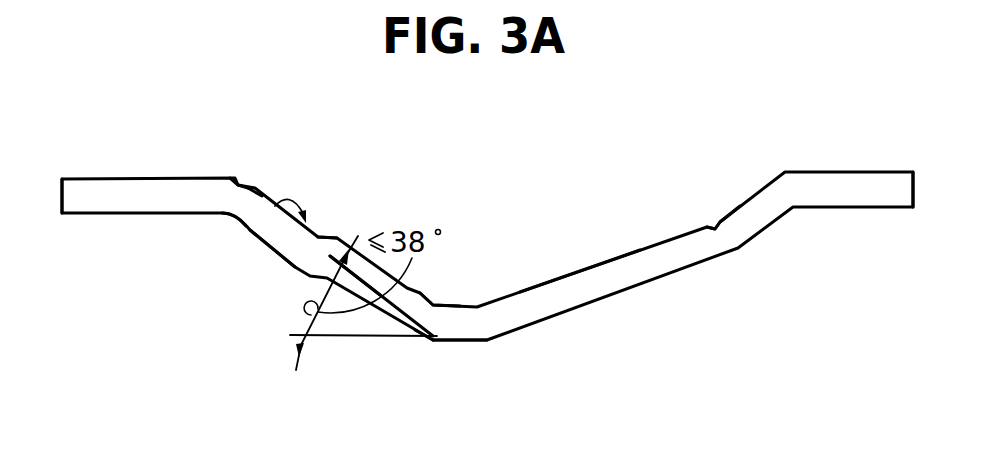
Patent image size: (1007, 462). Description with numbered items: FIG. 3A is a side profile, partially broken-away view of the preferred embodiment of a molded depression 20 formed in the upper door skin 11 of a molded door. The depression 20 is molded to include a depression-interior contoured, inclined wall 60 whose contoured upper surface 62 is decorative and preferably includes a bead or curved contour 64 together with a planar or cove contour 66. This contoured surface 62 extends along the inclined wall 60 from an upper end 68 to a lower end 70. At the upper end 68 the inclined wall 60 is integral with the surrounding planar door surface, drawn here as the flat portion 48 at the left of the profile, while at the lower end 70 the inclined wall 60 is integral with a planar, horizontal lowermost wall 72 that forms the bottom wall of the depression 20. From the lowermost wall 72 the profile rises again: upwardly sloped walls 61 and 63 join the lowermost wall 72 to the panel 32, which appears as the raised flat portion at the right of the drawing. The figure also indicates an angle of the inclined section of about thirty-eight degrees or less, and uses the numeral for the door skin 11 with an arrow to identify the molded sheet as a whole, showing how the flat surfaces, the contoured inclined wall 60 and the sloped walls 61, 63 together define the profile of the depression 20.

The upper door skin 11 is at (602, 250).
The depression 20 is at (349, 203).
The panel 32 is at (848, 185).
The inner flange 48 is at (97, 193).
The inclined wall 60 is at (328, 257).
The upwardly sloped wall 61 is at (582, 285).
The contoured upper surface 62 is at (275, 198).
The upwardly sloped wall 63 is at (745, 218).
The bead or curved contour 64 is at (258, 188).
The planar or cove contour 66 is at (330, 240).
The upper end 68 is at (235, 178).
The lower end 70 is at (440, 303).
The lowermost wall 72 is at (468, 322).